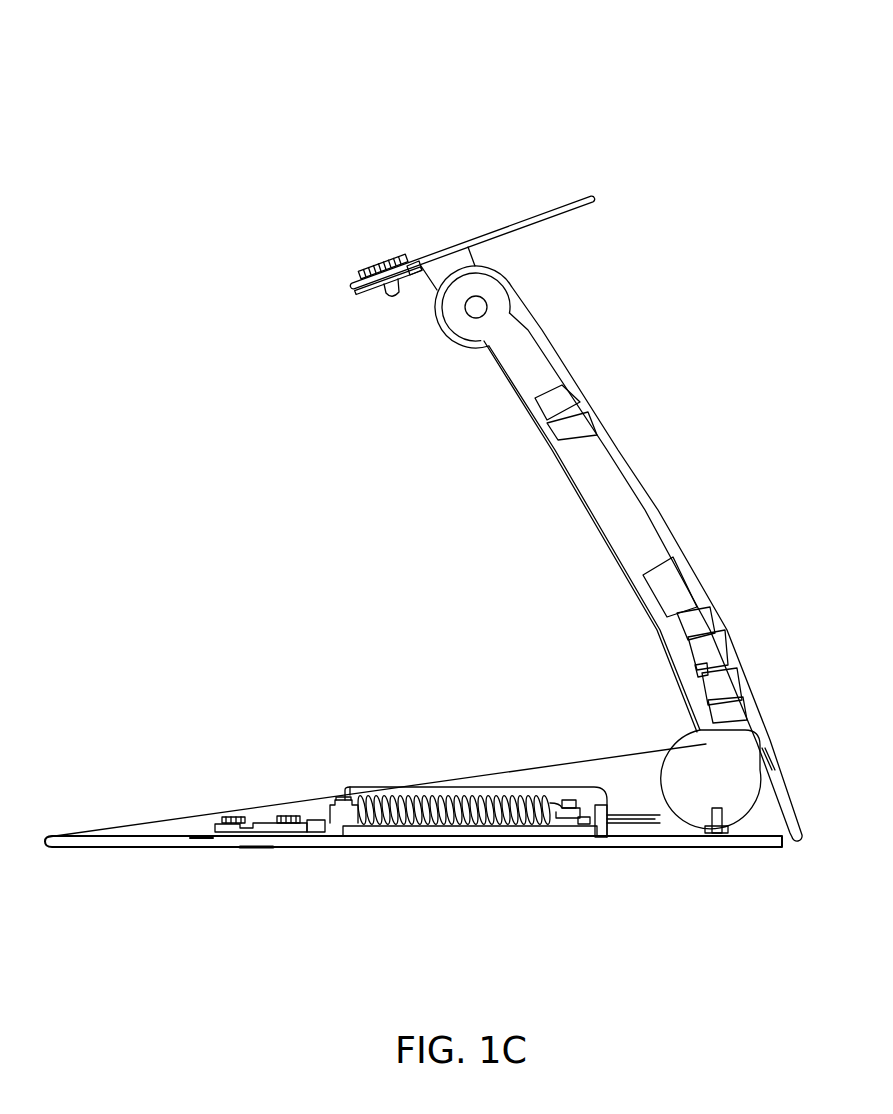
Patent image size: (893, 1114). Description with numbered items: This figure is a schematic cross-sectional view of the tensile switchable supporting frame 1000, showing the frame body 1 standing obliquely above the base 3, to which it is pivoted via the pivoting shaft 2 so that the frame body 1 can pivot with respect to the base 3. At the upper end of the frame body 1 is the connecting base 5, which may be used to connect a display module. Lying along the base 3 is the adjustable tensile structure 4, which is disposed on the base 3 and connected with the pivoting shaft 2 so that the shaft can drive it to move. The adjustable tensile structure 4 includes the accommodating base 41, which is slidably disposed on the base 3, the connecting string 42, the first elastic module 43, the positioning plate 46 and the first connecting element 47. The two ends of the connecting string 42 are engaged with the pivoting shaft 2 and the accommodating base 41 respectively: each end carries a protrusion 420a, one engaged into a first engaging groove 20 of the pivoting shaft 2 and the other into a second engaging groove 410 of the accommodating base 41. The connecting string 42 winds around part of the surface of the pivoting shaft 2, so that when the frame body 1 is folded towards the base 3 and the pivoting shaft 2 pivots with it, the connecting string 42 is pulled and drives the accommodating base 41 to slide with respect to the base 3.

The tensile switchable supporting frame 1000 is at (217, 59).
The frame body 1 is at (600, 478).
The pivoting shaft 2 is at (708, 758).
The base 3 is at (640, 760).
The adjustable tensile structure 4 is at (482, 790).
The connecting base 5 is at (557, 213).
The first engaging groove 20 is at (748, 810).
The accommodating base 41 is at (562, 795).
The connecting string 42 is at (627, 817).
The first elastic module 43 is at (392, 794).
The positioning plate 46 is at (270, 822).
The first connecting element 47 is at (312, 834).
The second engaging groove 410 is at (607, 814).
The protrusion 420a is at (593, 825).